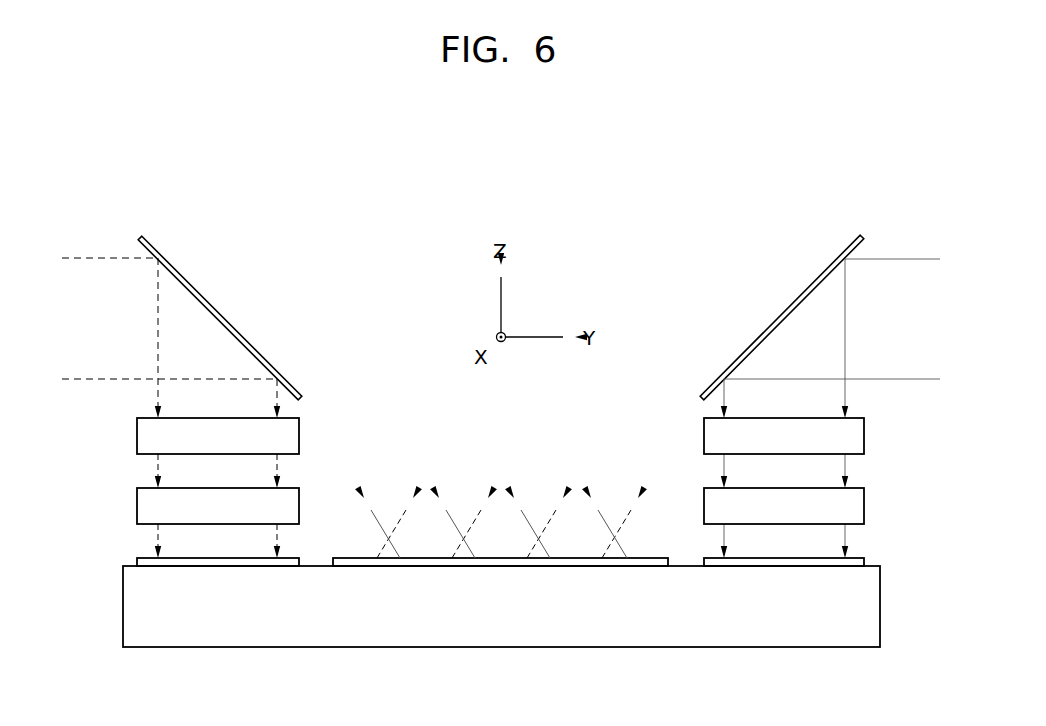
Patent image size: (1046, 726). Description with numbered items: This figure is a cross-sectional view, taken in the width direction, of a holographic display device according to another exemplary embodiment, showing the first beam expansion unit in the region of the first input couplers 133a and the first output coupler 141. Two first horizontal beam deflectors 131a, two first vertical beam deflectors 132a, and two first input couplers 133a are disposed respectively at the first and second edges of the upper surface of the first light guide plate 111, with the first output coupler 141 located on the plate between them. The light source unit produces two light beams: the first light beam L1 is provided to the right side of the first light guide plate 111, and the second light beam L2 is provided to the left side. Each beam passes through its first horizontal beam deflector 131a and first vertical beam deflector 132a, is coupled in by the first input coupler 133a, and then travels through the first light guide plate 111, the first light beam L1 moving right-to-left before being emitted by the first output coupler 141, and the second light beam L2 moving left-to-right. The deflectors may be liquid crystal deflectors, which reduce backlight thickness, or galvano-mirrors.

The first light guide plate 111 is at (686, 628).
The first output coupler 141 is at (501, 562).
The first horizontal beam deflector 131a is at (137, 436).
The first vertical beam deflector 132a is at (137, 506).
The first input coupler 133a is at (137, 563).
The first light beam L1 is at (893, 259).
The second light beam L2 is at (100, 258).